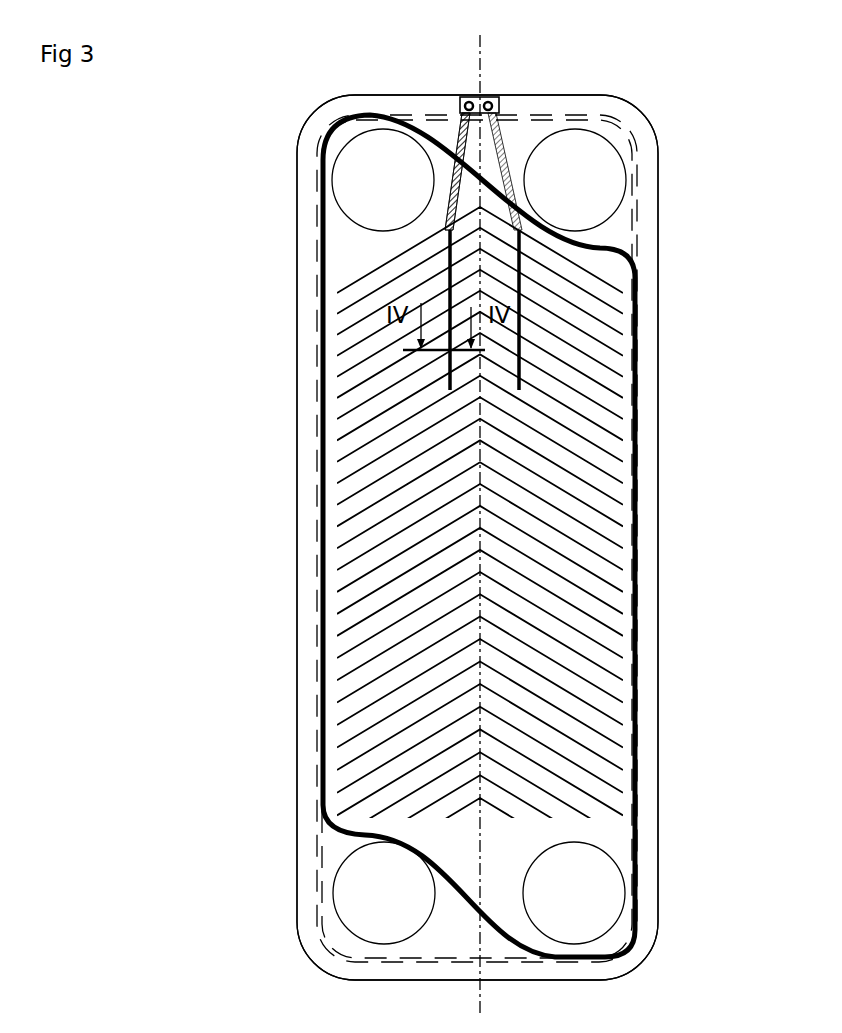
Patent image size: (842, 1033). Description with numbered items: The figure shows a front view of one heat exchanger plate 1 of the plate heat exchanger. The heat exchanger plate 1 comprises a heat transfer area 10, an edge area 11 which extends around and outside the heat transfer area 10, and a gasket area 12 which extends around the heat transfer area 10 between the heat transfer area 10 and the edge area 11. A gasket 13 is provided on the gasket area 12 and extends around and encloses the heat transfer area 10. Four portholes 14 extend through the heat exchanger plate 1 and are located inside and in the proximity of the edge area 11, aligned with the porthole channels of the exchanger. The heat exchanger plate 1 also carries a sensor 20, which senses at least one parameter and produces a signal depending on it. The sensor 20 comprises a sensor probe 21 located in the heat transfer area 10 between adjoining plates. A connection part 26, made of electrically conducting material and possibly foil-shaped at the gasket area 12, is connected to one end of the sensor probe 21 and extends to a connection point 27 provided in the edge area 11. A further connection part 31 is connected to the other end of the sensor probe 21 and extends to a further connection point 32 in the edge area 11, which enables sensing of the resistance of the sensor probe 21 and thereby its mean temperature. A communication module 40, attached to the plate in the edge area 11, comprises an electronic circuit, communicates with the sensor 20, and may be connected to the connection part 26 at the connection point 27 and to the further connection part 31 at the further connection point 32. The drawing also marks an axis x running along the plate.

The heat exchanger plate 1 is at (283, 130).
The heat transfer area 10 is at (543, 546).
The edge area 11 is at (305, 418).
The gasket area 12 is at (633, 238).
The gasket 13 is at (320, 260).
The portholes 14 is at (370, 170).
The sensor 20 is at (453, 170).
The sensor probe 21 is at (448, 270).
The connection part 26 is at (460, 152).
The connection point 27 is at (463, 97).
The further connection part 31 is at (497, 127).
The further connection point 32 is at (500, 95).
The communication module 40 is at (476, 97).
The longitudinal axis x is at (510, 512).